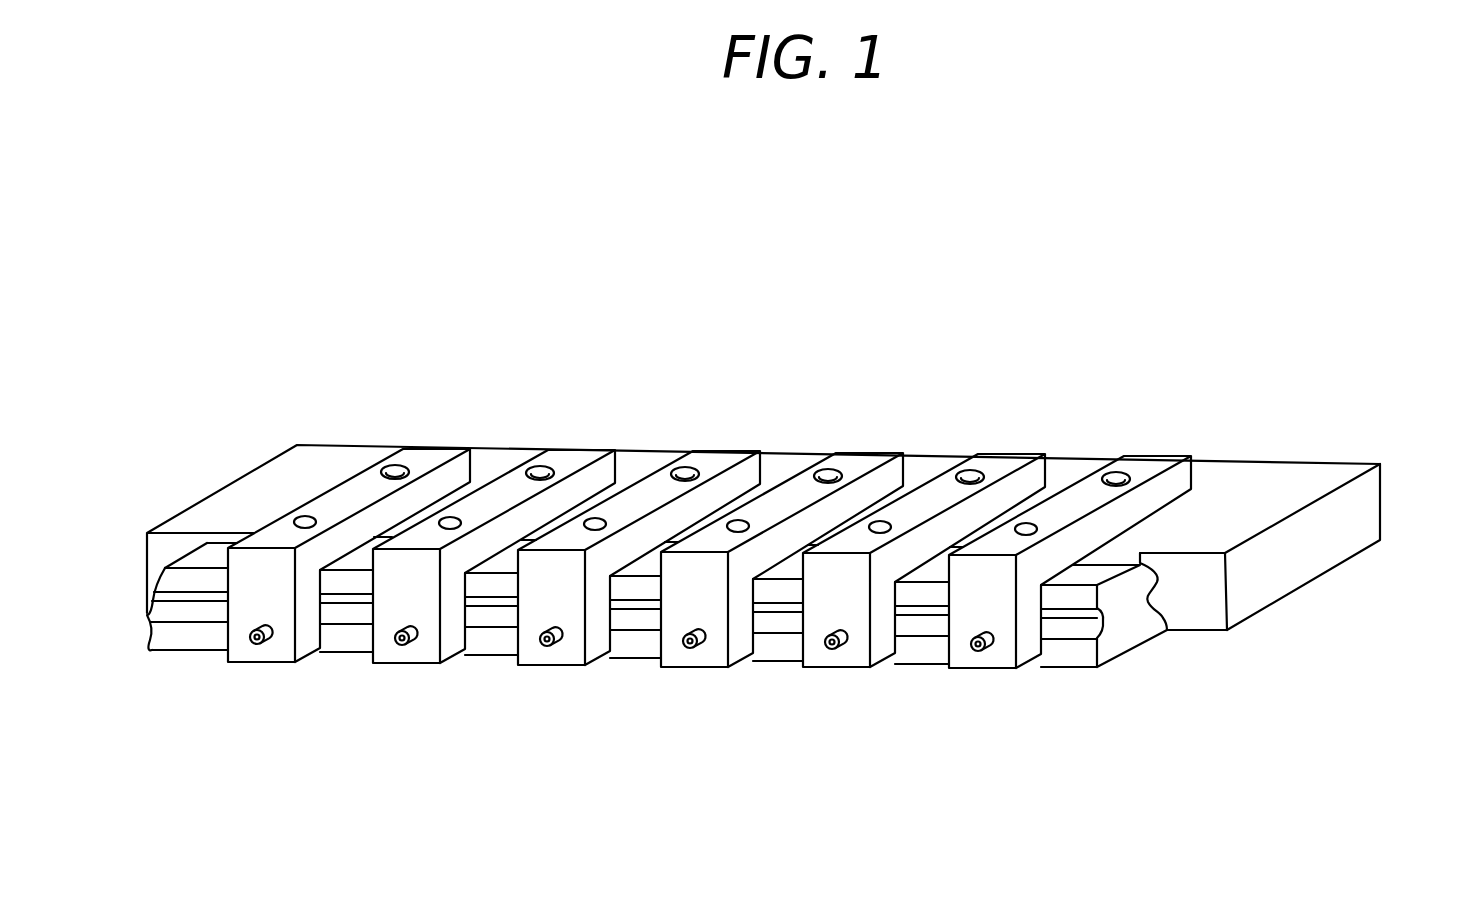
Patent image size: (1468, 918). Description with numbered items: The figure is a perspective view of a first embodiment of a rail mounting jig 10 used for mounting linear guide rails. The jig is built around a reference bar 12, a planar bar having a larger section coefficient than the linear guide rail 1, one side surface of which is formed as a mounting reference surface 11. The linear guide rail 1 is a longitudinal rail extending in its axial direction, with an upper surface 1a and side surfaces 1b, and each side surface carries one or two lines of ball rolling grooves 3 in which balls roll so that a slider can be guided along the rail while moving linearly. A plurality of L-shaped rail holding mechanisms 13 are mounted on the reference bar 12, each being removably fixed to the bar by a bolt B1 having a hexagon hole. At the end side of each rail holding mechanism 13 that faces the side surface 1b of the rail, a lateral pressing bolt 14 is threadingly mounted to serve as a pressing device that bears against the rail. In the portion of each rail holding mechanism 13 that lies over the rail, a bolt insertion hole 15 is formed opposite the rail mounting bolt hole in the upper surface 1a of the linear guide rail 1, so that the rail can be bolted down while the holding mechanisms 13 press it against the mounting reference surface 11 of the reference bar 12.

The rail mounting jig 10 is at (1004, 410).
The linear guide rail 1 is at (791, 620).
The upper surface 1a is at (1117, 550).
The side surface 1b is at (1072, 653).
The ball rolling grooves 3 is at (923, 597).
The mounting reference surface 11 is at (1203, 608).
The reference bar 12 is at (1246, 598).
The rail holding mechanism 13 is at (748, 549).
The lateral pressing bolt 14 is at (980, 652).
The bolt insertion hole 15 is at (1031, 523).
The bolt B1 is at (824, 472).